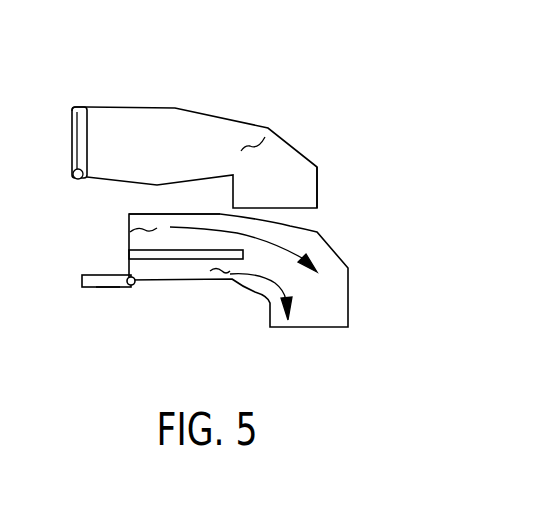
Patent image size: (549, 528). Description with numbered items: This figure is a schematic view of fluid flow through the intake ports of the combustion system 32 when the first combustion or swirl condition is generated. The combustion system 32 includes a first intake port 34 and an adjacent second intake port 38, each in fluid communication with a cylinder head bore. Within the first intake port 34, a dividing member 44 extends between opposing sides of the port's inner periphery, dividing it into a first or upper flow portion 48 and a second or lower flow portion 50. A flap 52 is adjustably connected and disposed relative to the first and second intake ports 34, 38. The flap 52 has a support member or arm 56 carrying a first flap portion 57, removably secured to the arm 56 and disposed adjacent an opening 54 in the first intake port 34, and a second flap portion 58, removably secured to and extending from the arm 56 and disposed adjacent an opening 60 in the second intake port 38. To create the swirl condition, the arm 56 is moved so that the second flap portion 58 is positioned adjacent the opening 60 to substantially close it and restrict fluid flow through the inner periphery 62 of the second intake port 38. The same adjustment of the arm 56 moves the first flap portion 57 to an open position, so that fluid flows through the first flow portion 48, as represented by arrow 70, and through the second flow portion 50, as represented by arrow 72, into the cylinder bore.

The combustion system 32 is at (323, 110).
The first intake port 34 is at (352, 297).
The second intake port 38 is at (318, 185).
The dividing member 44 is at (200, 254).
The first or upper flow portion 48 is at (128, 233).
The second or lower flow portion 50 is at (228, 275).
The flap 52 is at (82, 288).
The opening 54 is at (129, 223).
The arm 56 is at (133, 285).
The first flap portion 57 is at (108, 288).
The second flap portion 58 is at (72, 138).
The opening 60 is at (73, 106).
The inner periphery 62 is at (265, 137).
The arrow 70 is at (295, 250).
The arrow 72 is at (288, 290).